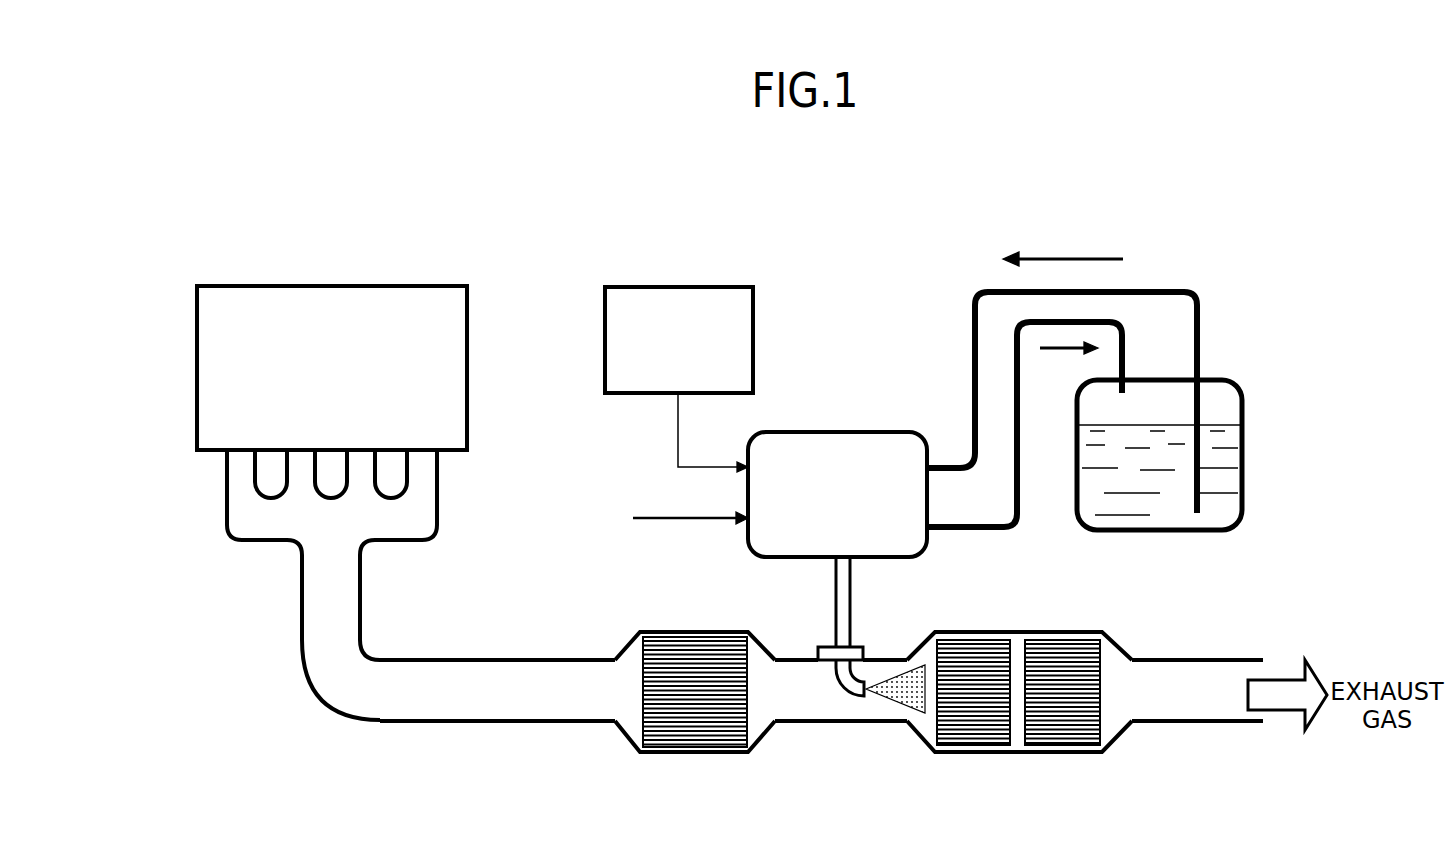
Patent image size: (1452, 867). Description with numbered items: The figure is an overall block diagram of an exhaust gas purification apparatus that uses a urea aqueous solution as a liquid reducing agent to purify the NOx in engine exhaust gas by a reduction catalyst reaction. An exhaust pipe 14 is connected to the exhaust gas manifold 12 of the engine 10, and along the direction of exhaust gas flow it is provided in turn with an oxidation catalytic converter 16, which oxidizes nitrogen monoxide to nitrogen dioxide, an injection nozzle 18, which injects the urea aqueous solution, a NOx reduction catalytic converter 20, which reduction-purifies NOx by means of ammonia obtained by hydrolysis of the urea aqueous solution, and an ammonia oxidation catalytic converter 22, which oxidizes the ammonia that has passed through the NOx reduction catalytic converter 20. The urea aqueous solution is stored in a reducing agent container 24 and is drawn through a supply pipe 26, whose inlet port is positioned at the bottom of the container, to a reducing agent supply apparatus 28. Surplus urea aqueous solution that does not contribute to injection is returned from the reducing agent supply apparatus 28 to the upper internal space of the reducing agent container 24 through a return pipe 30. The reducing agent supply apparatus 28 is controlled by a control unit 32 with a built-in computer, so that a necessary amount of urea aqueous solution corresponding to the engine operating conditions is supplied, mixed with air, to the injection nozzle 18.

The engine 10 is at (360, 285).
The exhaust gas manifold 12 is at (227, 505).
The exhaust pipe 14 is at (448, 660).
The oxidation catalytic converter 16 is at (695, 735).
The injection nozzle 18 is at (840, 698).
The NOx reduction catalytic converter 20 is at (988, 737).
The ammonia oxidation catalytic converter 22 is at (1070, 737).
The reducing agent container 24 is at (1243, 415).
The supply pipe 26 is at (1200, 296).
The reducing agent supply apparatus 28 is at (880, 430).
The return pipe 30 is at (980, 532).
The control unit 32 is at (677, 285).